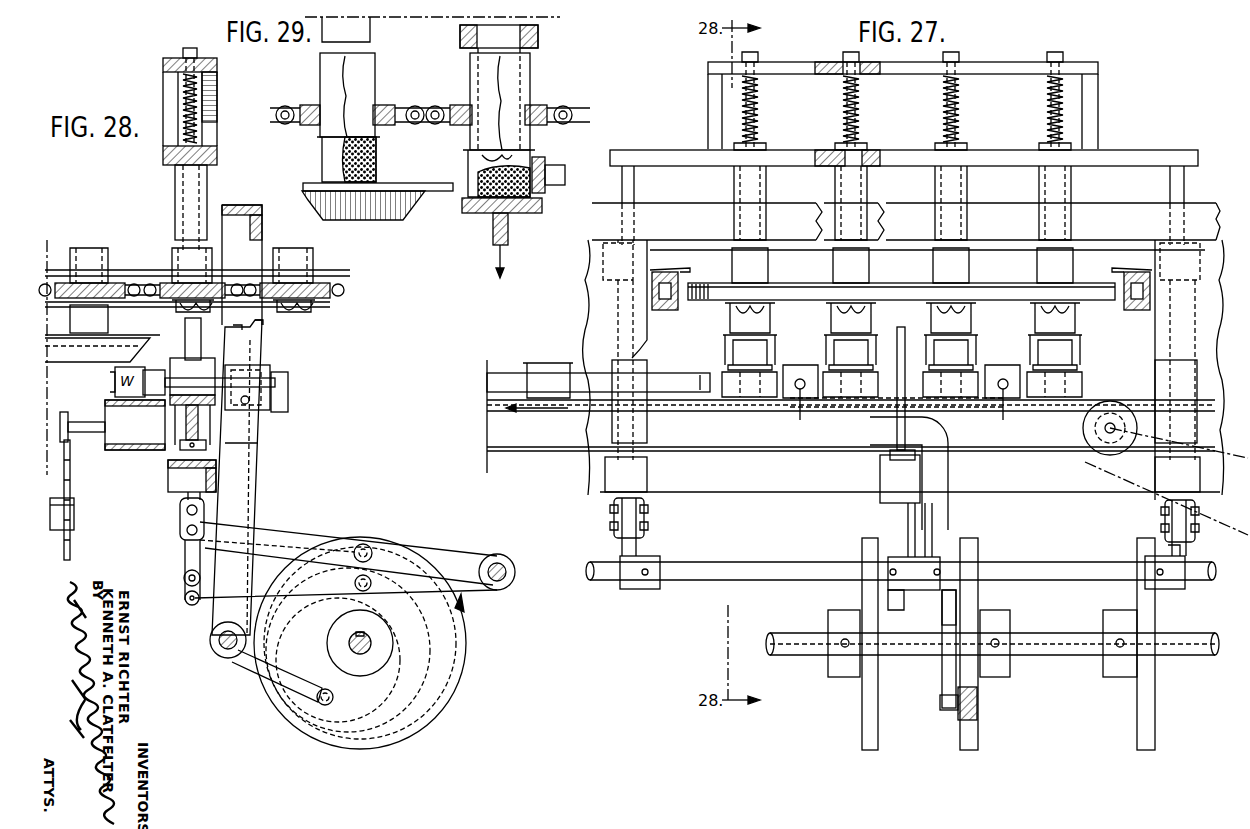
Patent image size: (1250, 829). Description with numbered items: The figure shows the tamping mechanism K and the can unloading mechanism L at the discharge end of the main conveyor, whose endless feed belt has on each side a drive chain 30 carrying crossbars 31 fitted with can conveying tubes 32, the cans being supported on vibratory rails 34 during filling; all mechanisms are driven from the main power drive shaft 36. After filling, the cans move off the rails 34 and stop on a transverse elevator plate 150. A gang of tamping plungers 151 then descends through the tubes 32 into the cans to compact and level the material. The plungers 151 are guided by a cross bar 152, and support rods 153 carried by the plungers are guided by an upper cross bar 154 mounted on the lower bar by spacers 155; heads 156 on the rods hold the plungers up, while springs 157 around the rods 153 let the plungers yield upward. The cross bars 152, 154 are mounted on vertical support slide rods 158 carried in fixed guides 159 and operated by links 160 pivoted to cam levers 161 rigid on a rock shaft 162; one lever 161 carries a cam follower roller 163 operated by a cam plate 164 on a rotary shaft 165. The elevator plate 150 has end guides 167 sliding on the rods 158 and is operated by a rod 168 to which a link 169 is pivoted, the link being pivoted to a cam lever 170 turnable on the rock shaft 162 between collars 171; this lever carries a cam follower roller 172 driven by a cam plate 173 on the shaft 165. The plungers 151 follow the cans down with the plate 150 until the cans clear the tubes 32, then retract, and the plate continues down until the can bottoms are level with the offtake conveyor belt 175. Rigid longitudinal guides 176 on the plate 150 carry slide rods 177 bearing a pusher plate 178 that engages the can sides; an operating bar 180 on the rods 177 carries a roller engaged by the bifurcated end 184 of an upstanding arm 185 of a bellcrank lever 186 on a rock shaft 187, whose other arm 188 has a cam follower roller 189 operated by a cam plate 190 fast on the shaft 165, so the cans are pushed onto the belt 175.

In FIG. 27, the drive chain 30 is at (1136, 275).
In FIG. 28, the drive chain 30 is at (345, 291).
In FIG. 29, the drive chain 30 is at (436, 106).
In FIG. 27, the crossbar 31 is at (895, 285).
In FIG. 28, the crossbar 31 is at (160, 283).
In FIG. 29, the crossbar 31 is at (378, 105).
In FIG. 27, the can conveying tube 32 is at (833, 270).
In FIG. 28, the can conveying tube 32 is at (72, 248).
In FIG. 29, the can conveying tube 32 is at (320, 66).
In FIG. 27, the vibratory rail 34 is at (736, 344).
In FIG. 28, the vibratory rail 34 is at (82, 348).
In FIG. 29, the vibratory rail 34 is at (408, 205).
In FIG. 28, the main power drive shaft 36 is at (76, 503).
In FIG. 27, the elevator plate 150 is at (733, 396).
In FIG. 28, the elevator plate 150 is at (215, 420).
In FIG. 29, the elevator plate 150 is at (522, 212).
In FIG. 27, the tamping plunger 151 is at (768, 186).
In FIG. 28, the tamping plunger 151 is at (207, 182).
In FIG. 29, the tamping plunger 151 is at (370, 36).
In FIG. 27, the cross bar 152 is at (1125, 152).
In FIG. 28, the cross bar 152 is at (165, 156).
In FIG. 29, the cross bar 152 is at (540, 38).
In FIG. 27, the support rod 153 is at (766, 130).
In FIG. 28, the support rod 153 is at (190, 77).
In FIG. 27, the upper cross bar 154 is at (995, 62).
In FIG. 28, the upper cross bar 154 is at (166, 62).
In FIG. 27, the spacer 155 is at (716, 90).
In FIG. 27, the head 156 is at (757, 56).
In FIG. 28, the head 156 is at (190, 47).
In FIG. 27, the spring 157 is at (762, 88).
In FIG. 28, the spring 157 is at (205, 97).
In FIG. 27, the support slide rod 158 is at (636, 186).
In FIG. 28, the support slide rod 158 is at (188, 328).
In FIG. 27, the fixed guide 159 is at (605, 282).
In FIG. 28, the fixed guide 159 is at (172, 248).
In FIG. 27, the link 160 is at (612, 525).
In FIG. 28, the link 160 is at (180, 512).
In FIG. 27, the cam lever 161 is at (622, 545).
In FIG. 28, the cam lever 161 is at (285, 526).
In FIG. 27, the rock shaft 162 is at (736, 568).
In FIG. 28, the rock shaft 162 is at (497, 556).
In FIG. 27, the cam follower roller 163 is at (1160, 542).
In FIG. 28, the cam follower roller 163 is at (368, 546).
In FIG. 27, the cam plate 164 is at (1160, 728).
In FIG. 27, the rotary shaft 165 is at (1070, 657).
In FIG. 28, the rotary shaft 165 is at (372, 646).
In FIG. 27, the guide 167 is at (650, 364).
In FIG. 27, the rod 168 is at (885, 507).
In FIG. 28, the rod 168 is at (185, 545).
In FIG. 28, the link 169 is at (184, 578).
In FIG. 27, the cam lever 170 is at (912, 615).
In FIG. 28, the cam lever 170 is at (190, 604).
In FIG. 27, the collar 171 is at (905, 560).
In FIG. 27, the cam follower roller 172 is at (882, 596).
In FIG. 28, the cam follower roller 172 is at (393, 580).
In FIG. 27, the cam plate 173 is at (862, 727).
In FIG. 28, the cam plate 173 is at (455, 700).
In FIG. 27, the offtake conveyor belt 175 is at (562, 446).
In FIG. 28, the offtake conveyor belt 175 is at (150, 452).
In FIG. 27, the longitudinal guide 176 is at (800, 366).
In FIG. 28, the longitudinal guide 176 is at (262, 368).
In FIG. 27, the slide rod 177 is at (804, 392).
In FIG. 28, the slide rod 177 is at (200, 378).
In FIG. 29, the slide rod 177 is at (560, 172).
In FIG. 27, the pusher plate 178 is at (1090, 384).
In FIG. 28, the pusher plate 178 is at (160, 370).
In FIG. 29, the pusher plate 178 is at (545, 158).
In FIG. 28, the operating bar 180 is at (290, 390).
In FIG. 27, the bifurcated end 184 is at (901, 330).
In FIG. 28, the bifurcated end 184 is at (262, 330).
In FIG. 27, the upstanding arm 185 is at (950, 478).
In FIG. 28, the upstanding arm 185 is at (255, 478).
In FIG. 27, the bellcrank lever 186 is at (936, 672).
In FIG. 28, the bellcrank lever 186 is at (226, 656).
In FIG. 27, the rock shaft 187 is at (768, 636).
In FIG. 28, the rock shaft 187 is at (219, 641).
In FIG. 28, the arm 188 is at (248, 664).
In FIG. 27, the cam follower roller 189 is at (978, 705).
In FIG. 28, the cam follower roller 189 is at (334, 697).
In FIG. 27, the cam plate 190 is at (968, 750).
In FIG. 28, the tamping mechanism K is at (170, 198).
In FIG. 27, the can unloading mechanism L is at (516, 372).
In FIG. 28, the can unloading mechanism L is at (104, 444).
In FIG. 27, the wafer W is at (548, 367).
In FIG. 28, the wafer W is at (89, 319).
In FIG. 29, the wafer W is at (322, 160).